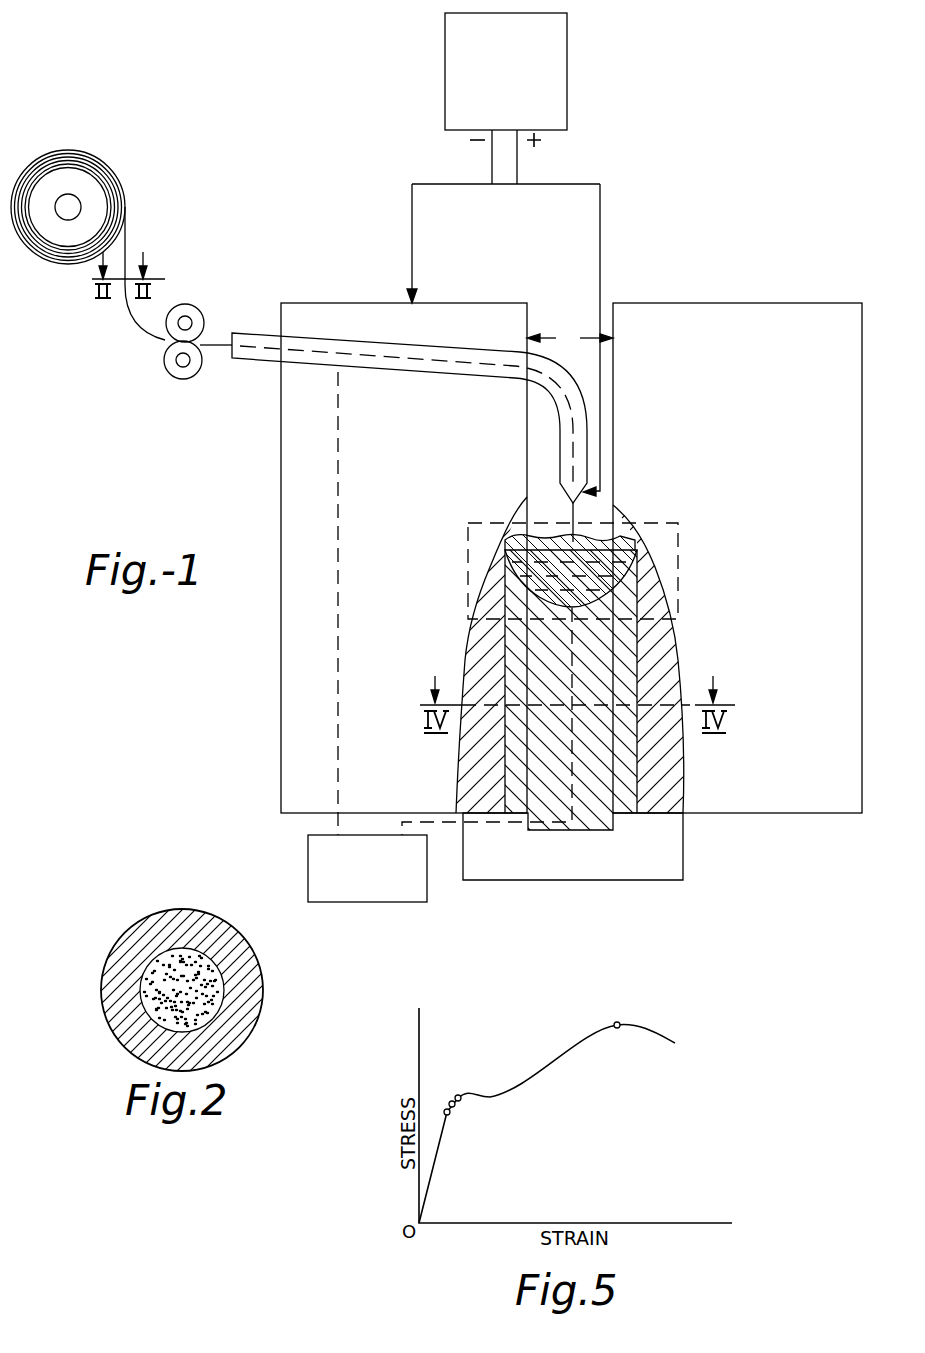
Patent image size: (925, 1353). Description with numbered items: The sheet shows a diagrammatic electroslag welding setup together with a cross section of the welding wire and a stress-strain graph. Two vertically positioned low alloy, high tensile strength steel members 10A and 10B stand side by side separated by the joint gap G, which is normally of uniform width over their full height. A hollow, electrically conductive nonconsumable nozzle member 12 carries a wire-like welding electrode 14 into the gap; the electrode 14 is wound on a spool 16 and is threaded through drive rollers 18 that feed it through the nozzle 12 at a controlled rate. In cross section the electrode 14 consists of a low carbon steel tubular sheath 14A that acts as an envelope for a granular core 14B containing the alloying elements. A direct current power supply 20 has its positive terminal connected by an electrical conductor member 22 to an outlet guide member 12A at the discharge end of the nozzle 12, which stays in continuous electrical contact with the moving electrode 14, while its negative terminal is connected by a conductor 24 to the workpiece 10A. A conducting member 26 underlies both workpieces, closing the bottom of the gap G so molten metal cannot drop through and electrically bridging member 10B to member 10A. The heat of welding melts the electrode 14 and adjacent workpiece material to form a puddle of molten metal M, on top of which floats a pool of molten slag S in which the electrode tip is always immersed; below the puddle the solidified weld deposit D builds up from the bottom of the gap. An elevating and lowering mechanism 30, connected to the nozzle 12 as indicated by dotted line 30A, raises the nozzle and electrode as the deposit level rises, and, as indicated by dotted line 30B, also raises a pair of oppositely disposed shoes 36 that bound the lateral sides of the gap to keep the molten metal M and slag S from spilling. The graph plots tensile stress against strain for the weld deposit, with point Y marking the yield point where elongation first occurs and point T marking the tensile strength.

In FIG. 1, the metal member 10A is at (450, 455).
In FIG. 1, the metal member 10B is at (760, 459).
In FIG. 1, the nozzle member 12 is at (472, 336).
In FIG. 1, the outlet guide member 12A is at (567, 496).
In FIG. 1, the welding electrode 14 is at (246, 318).
In FIG. 2, the welding electrode 14 is at (193, 912).
In FIG. 2, the tubular sheath 14A is at (252, 970).
In FIG. 2, the core 14B is at (141, 980).
In FIG. 1, the spool 16 is at (88, 181).
In FIG. 1, the drive rollers 18 is at (166, 352).
In FIG. 1, the direct current power supply 20 is at (568, 76).
In FIG. 1, the electrical conductor member 22 is at (600, 213).
In FIG. 1, the conductor 24 is at (430, 184).
In FIG. 1, the conducting member 26 is at (575, 873).
In FIG. 1, the elevating and lowering mechanism 30 is at (427, 886).
In FIG. 1, the dotted line 30A is at (338, 500).
In FIG. 1, the dotted line 30B is at (572, 688).
In FIG. 1, the shoes 36 is at (468, 553).
In FIG. 1, the weld deposit D is at (625, 649).
In FIG. 1, the puddle of molten metal M is at (557, 597).
In FIG. 1, the pool of molten slag S is at (619, 536).
In FIG. 1, the joint gap G is at (570, 339).
In FIG. 5, the point T is at (621, 1022).
In FIG. 5, the point Y is at (458, 1093).